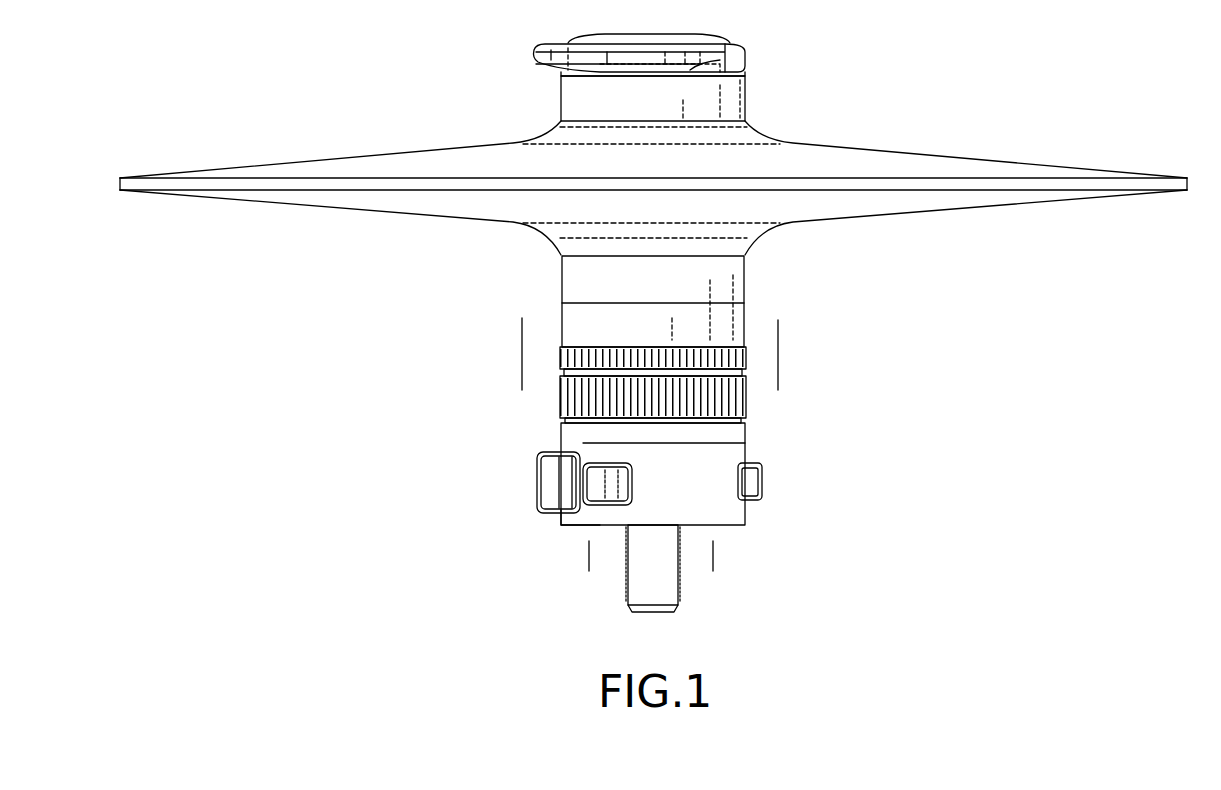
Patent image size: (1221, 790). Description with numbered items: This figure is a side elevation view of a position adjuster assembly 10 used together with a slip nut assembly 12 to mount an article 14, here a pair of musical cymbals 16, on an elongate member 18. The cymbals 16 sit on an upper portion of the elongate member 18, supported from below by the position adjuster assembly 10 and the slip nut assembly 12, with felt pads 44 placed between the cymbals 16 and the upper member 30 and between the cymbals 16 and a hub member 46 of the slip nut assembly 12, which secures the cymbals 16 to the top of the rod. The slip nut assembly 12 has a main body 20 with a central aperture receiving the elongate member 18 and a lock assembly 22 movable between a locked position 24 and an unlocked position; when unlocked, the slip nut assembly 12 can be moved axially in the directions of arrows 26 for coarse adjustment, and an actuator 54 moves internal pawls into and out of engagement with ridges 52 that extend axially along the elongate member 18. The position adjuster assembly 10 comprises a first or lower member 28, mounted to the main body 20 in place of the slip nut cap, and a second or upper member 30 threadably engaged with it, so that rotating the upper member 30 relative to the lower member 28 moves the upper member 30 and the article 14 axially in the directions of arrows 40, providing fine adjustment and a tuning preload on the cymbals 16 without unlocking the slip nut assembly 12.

The position adjuster assembly 10 is at (356, 319).
The slip nut assembly 12 is at (765, 511).
The article 14 is at (653, 192).
The musical cymbals 16 is at (327, 157).
The elongate member 18 is at (615, 576).
The main body 20 is at (750, 453).
The lock assembly 22 is at (525, 474).
The locked position 24 is at (545, 521).
The arrows 26 is at (586, 549).
The first or lower member 28 is at (545, 433).
The second or upper member 30 is at (550, 388).
The arrows 40 is at (520, 352).
The felt pads 44 is at (748, 100).
The hub member 46 is at (746, 60).
The ridges 52 is at (680, 578).
The actuator 54 is at (540, 492).